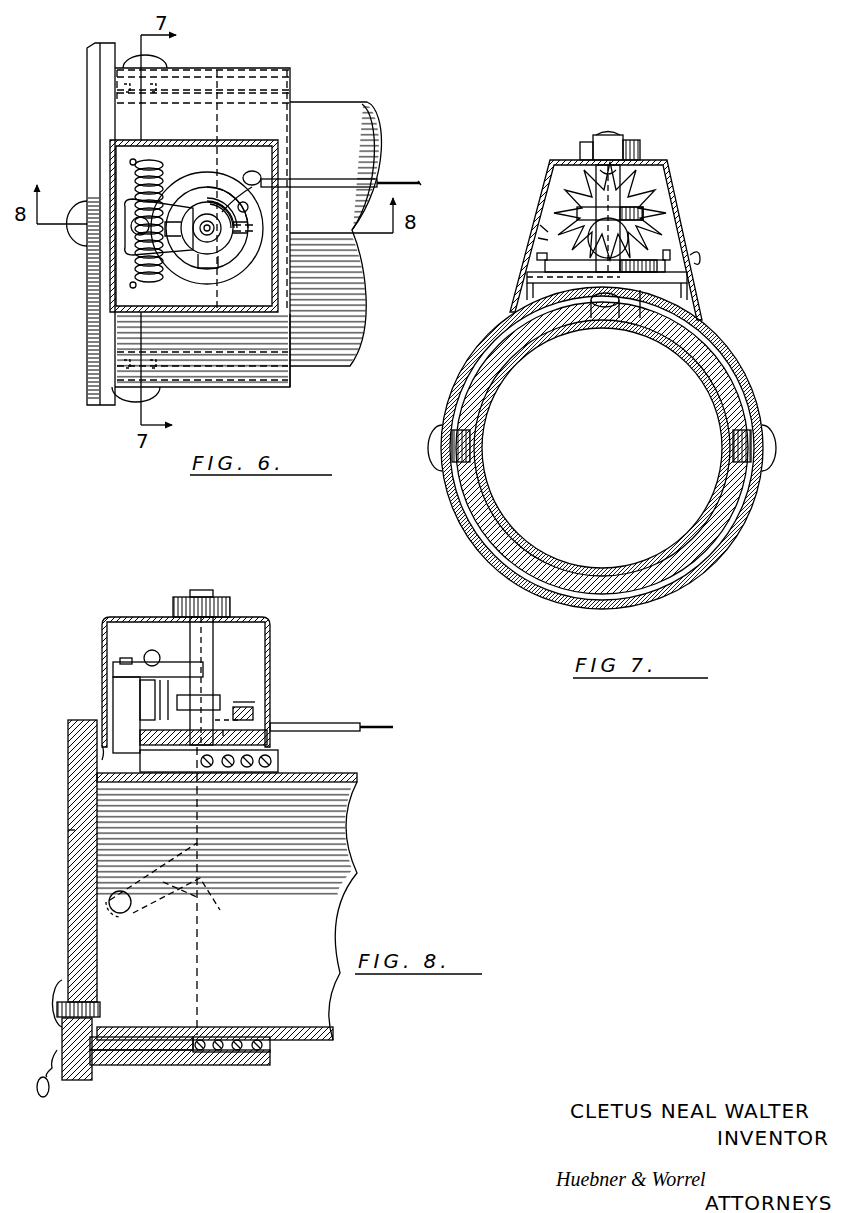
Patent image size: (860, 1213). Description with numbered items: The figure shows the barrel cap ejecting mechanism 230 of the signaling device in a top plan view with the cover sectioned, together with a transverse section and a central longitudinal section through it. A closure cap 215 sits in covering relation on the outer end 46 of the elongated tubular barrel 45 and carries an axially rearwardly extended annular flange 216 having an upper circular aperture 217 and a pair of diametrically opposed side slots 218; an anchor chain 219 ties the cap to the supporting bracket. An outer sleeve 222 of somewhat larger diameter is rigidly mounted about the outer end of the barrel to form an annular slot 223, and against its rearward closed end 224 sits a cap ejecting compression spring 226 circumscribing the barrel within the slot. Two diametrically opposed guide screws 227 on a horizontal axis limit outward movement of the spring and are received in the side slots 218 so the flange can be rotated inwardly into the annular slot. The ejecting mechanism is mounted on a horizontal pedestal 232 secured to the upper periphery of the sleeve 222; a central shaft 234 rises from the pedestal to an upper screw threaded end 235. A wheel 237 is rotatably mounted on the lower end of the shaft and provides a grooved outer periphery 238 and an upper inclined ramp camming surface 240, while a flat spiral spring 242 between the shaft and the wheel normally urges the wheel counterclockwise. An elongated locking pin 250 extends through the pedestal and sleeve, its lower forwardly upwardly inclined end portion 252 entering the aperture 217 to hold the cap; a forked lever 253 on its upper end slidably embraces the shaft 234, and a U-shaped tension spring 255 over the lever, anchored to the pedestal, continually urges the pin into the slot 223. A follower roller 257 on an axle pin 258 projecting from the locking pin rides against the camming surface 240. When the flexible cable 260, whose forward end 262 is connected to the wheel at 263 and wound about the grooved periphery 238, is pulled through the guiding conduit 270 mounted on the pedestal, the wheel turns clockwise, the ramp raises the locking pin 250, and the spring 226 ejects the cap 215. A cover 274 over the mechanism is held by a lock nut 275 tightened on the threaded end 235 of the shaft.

In FIG. 6, the tubular barrel 45 is at (357, 272).
In FIG. 7, the tubular barrel 45 is at (722, 380).
In FIG. 8, the tubular barrel 45 is at (332, 855).
In FIG. 7, the outer end of the barrel 46 is at (530, 547).
In FIG. 8, the outer end of the barrel 46 is at (100, 1022).
In FIG. 6, the closure cap 215 is at (92, 46).
In FIG. 8, the closure cap 215 is at (92, 1082).
In FIG. 6, the annular flange 216 is at (210, 76).
In FIG. 7, the annular flange 216 is at (727, 522).
In FIG. 8, the annular flange 216 is at (180, 1053).
In FIG. 7, the upper circular aperture 217 is at (600, 322).
In FIG. 8, the upper circular aperture 217 is at (70, 832).
In FIG. 7, the side slots 218 is at (473, 440).
In FIG. 8, the side slots 218 is at (198, 893).
In FIG. 8, the anchor chain 219 is at (42, 1097).
In FIG. 6, the outer sleeve 222 is at (277, 90).
In FIG. 7, the outer sleeve 222 is at (490, 553).
In FIG. 8, the outer sleeve 222 is at (251, 1067).
In FIG. 8, the annular slot 223 is at (214, 1054).
In FIG. 6, the closed end 224 is at (292, 92).
In FIG. 8, the closed end 224 is at (271, 1052).
In FIG. 8, the cap ejecting compression spring 226 is at (237, 1040).
In FIG. 6, the guide screws 227 is at (168, 78).
In FIG. 7, the guide screws 227 is at (474, 447).
In FIG. 8, the guide screws 227 is at (124, 912).
In FIG. 6, the cap ejecting mechanism 230 is at (283, 142).
In FIG. 7, the cap ejecting mechanism 230 is at (671, 160).
In FIG. 8, the cap ejecting mechanism 230 is at (273, 638).
In FIG. 6, the pedestal 232 is at (262, 300).
In FIG. 7, the pedestal 232 is at (689, 282).
In FIG. 8, the pedestal 232 is at (268, 738).
In FIG. 6, the shaft 234 is at (203, 257).
In FIG. 8, the shaft 234 is at (207, 680).
In FIG. 7, the upper screw threaded end 235 is at (620, 128).
In FIG. 8, the upper screw threaded end 235 is at (213, 590).
In FIG. 6, the wheel 237 is at (246, 254).
In FIG. 7, the wheel 237 is at (650, 315).
In FIG. 8, the wheel 237 is at (253, 713).
In FIG. 6, the grooved outer periphery 238 is at (272, 220).
In FIG. 7, the grooved outer periphery 238 is at (689, 268).
In FIG. 8, the grooved outer periphery 238 is at (262, 721).
In FIG. 6, the inclined ramp camming surface 240 is at (261, 269).
In FIG. 7, the inclined ramp camming surface 240 is at (637, 253).
In FIG. 6, the flat spiral spring 242 is at (246, 246).
In FIG. 8, the flat spiral spring 242 is at (233, 700).
In FIG. 7, the locking pin 250 is at (553, 228).
In FIG. 8, the locking pin 250 is at (117, 683).
In FIG. 7, the inclined end portion 252 is at (613, 320).
In FIG. 8, the inclined end portion 252 is at (117, 752).
In FIG. 6, the forked lever 253 is at (183, 200).
In FIG. 7, the forked lever 253 is at (577, 207).
In FIG. 8, the forked lever 253 is at (170, 667).
In FIG. 6, the tension spring 255 is at (178, 202).
In FIG. 7, the tension spring 255 is at (632, 203).
In FIG. 8, the tension spring 255 is at (150, 650).
In FIG. 7, the follower roller 257 is at (653, 237).
In FIG. 8, the follower roller 257 is at (133, 670).
In FIG. 7, the axle pin 258 is at (593, 273).
In FIG. 8, the axle pin 258 is at (190, 674).
In FIG. 6, the flexible cable 260 is at (421, 186).
In FIG. 7, the flexible cable 260 is at (689, 274).
In FIG. 8, the flexible cable 260 is at (391, 731).
In FIG. 6, the forward end of the cable 262 is at (239, 206).
In FIG. 6, the cable connection point 263 is at (262, 179).
In FIG. 6, the conduit 270 is at (380, 181).
In FIG. 8, the conduit 270 is at (361, 738).
In FIG. 7, the cover 274 is at (583, 152).
In FIG. 8, the cover 274 is at (253, 620).
In FIG. 7, the lock nut 275 is at (588, 148).
In FIG. 8, the lock nut 275 is at (182, 600).